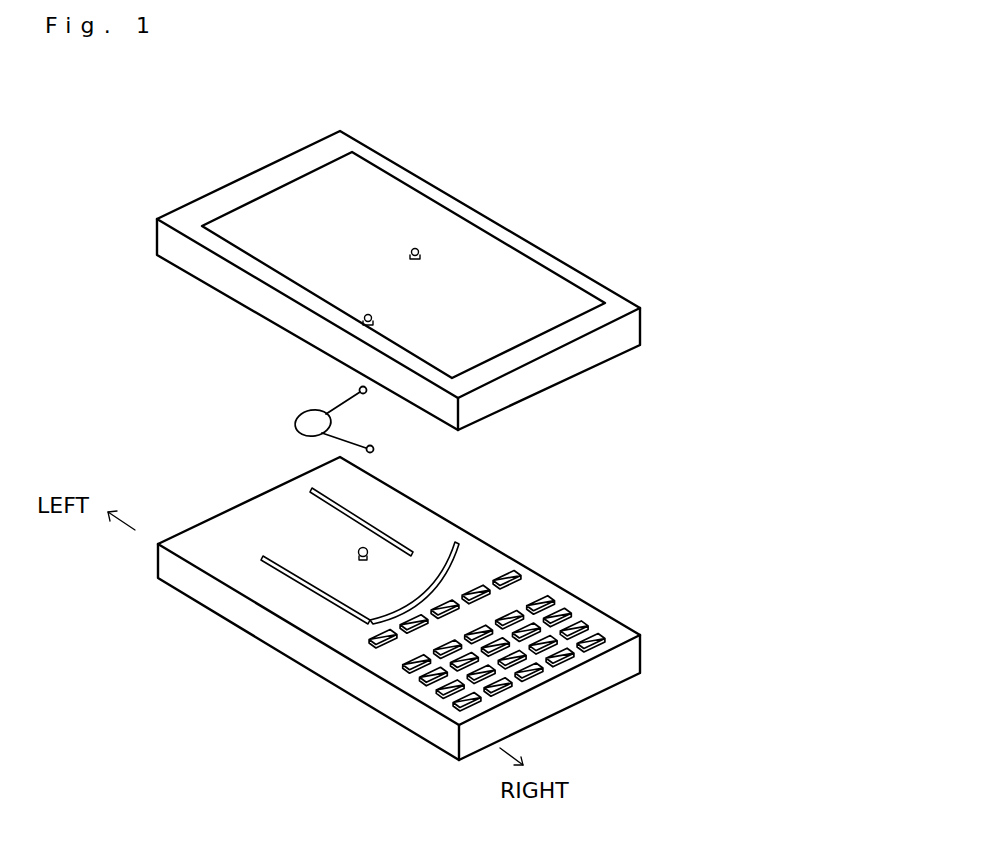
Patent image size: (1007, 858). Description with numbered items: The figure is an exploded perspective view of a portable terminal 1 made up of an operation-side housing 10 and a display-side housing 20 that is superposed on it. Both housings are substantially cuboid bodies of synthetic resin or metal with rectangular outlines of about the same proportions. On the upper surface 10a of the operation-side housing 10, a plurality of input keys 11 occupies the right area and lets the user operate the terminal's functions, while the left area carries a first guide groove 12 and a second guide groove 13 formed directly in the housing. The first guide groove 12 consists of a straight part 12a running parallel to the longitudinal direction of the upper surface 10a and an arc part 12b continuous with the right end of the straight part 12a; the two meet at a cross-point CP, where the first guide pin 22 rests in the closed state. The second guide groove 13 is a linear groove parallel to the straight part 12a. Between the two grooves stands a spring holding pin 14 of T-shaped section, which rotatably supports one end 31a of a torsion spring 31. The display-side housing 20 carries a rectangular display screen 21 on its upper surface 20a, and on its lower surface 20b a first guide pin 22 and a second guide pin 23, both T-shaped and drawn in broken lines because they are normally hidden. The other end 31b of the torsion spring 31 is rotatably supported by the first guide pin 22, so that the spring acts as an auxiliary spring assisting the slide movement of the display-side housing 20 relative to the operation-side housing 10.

The portable terminal 1 is at (548, 176).
The operation-side housing 10 is at (546, 710).
The upper surface of operation-side housing 10a is at (625, 637).
The input keys 11 is at (415, 673).
The first guide groove 12 is at (268, 722).
The straight part 12a is at (322, 588).
The arc part 12b is at (402, 600).
The second guide groove 13 is at (382, 523).
The spring holding pin 14 is at (357, 550).
The display-side housing 20 is at (588, 360).
The upper surface of display-side housing 20a is at (615, 307).
The lower surface of display-side housing 20b is at (517, 398).
The display screen 21 is at (520, 270).
The first guide pin 22 is at (362, 320).
The second guide pin 23 is at (413, 247).
The torsion spring 31 is at (298, 422).
The one end of torsion spring 31a is at (362, 387).
The other end of torsion spring 31b is at (380, 448).
The cross-point CP is at (368, 612).